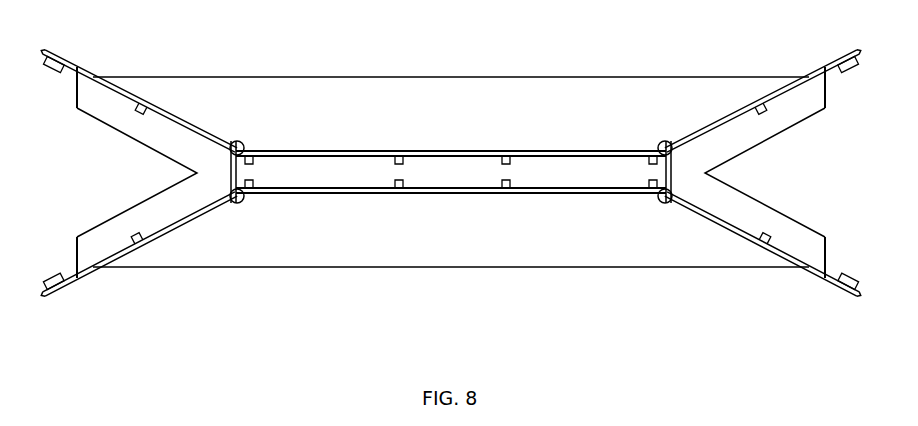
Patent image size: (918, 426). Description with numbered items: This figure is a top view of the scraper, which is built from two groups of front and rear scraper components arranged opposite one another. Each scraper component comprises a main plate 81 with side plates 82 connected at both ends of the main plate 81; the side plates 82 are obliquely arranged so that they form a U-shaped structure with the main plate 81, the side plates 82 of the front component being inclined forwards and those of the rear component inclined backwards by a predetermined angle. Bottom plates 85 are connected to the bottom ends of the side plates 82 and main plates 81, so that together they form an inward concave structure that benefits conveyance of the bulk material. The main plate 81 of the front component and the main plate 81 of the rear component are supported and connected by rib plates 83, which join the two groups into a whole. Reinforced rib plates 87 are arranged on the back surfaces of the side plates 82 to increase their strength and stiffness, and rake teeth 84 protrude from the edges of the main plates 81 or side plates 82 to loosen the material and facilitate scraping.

The main plate 81 is at (563, 193).
The side plate 82 is at (173, 230).
The rib plate 83 is at (337, 170).
The rake tooth 84 is at (143, 106).
The bottom plate 85 is at (420, 245).
The reinforced rib plate 87 is at (727, 138).